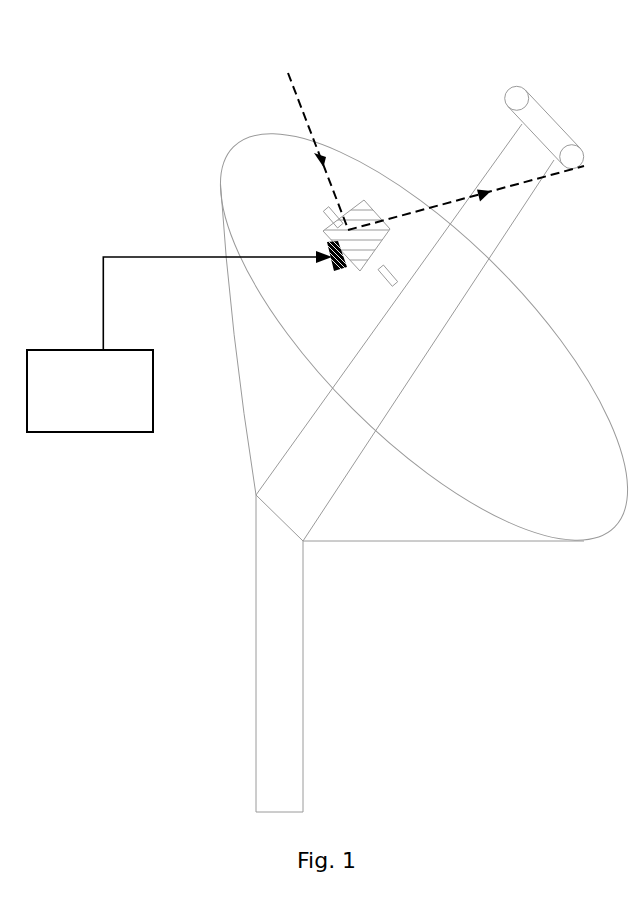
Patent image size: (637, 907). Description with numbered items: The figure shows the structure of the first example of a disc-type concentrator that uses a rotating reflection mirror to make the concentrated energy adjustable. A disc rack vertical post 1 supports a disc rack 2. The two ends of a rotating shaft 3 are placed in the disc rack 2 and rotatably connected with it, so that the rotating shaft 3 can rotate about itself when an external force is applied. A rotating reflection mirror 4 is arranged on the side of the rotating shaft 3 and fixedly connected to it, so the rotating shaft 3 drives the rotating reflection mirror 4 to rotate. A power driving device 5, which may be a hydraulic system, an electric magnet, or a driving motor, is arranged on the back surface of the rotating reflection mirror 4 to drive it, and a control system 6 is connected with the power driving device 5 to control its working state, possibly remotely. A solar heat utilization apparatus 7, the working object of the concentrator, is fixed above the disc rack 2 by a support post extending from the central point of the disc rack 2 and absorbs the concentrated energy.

The disc rack vertical post 1 is at (198, 653).
The disc rack 2 is at (399, 371).
The rotating shaft 3 is at (444, 441).
The rotating reflection mirror 4 is at (462, 410).
The power driving device 5 is at (292, 194).
The control system 6 is at (179, 295).
The solar heat utilization apparatus 7 is at (551, 95).